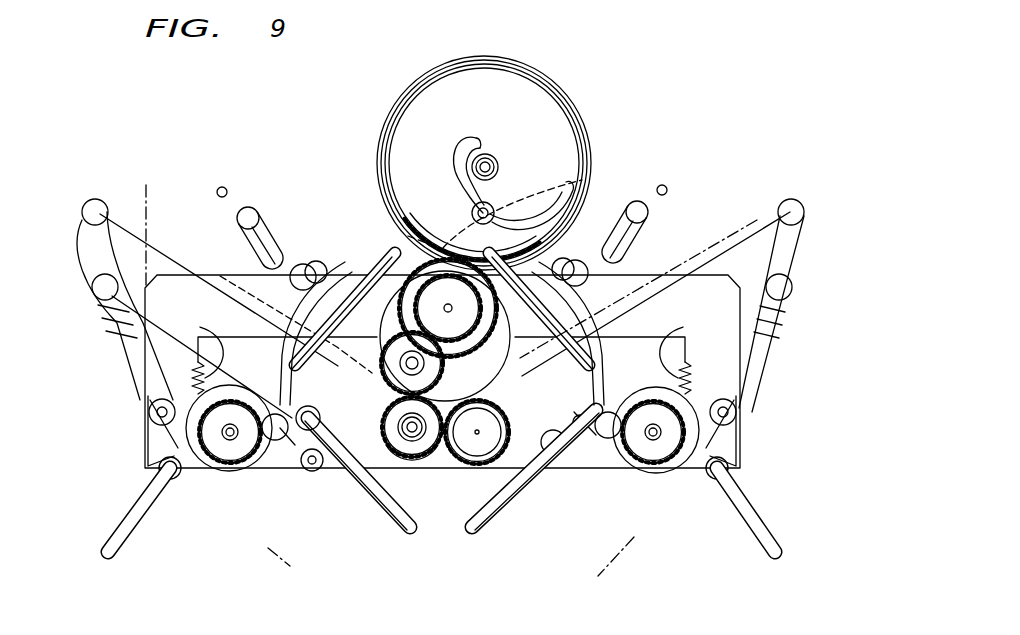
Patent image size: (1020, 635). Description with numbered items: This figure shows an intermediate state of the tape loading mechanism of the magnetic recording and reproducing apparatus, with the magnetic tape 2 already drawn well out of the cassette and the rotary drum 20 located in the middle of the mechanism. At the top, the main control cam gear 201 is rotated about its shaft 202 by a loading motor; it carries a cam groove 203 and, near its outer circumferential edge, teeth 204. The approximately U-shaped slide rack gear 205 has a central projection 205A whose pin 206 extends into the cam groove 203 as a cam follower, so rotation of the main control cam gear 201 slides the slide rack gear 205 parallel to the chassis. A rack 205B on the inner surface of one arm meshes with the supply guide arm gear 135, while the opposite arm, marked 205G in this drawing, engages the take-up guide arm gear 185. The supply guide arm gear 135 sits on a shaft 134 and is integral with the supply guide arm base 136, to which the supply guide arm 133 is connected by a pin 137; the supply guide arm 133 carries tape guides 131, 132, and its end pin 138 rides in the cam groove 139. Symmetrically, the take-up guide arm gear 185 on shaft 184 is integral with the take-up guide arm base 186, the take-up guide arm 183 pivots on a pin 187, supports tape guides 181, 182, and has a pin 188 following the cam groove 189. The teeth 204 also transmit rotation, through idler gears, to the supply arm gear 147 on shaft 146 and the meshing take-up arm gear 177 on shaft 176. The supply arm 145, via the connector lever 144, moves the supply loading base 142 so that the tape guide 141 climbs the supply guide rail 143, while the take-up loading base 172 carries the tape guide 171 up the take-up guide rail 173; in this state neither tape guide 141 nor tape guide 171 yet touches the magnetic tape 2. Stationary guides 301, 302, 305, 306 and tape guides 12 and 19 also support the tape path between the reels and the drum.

The magnetic tape 2 is at (442, 372).
The tape guide 12 is at (232, 444).
The tape guide 19 is at (602, 439).
The rotary drum 20 is at (600, 312).
The tape guide 131 is at (95, 198).
The tape guide 132 is at (92, 292).
The supply guide arm 133 is at (127, 344).
The shaft 134 is at (222, 472).
The supply guide arm gear 135 is at (216, 448).
The supply guide arm base 136 is at (147, 432).
The pin 137 is at (148, 410).
The pin 138 is at (158, 470).
The cam groove 139 is at (100, 534).
The tape guide 141 is at (312, 407).
The supply loading base 142 is at (330, 287).
The supply guide rail 143 is at (372, 509).
The connector lever 144 is at (303, 468).
The supply arm 145 is at (330, 470).
The shaft 146 is at (405, 469).
The supply arm gear 147 is at (386, 420).
The tape guide 171 is at (541, 436).
The take-up loading base 172 is at (578, 404).
The take-up guide rail 173 is at (505, 504).
The shaft 176 is at (503, 461).
The take-up arm gear 177 is at (440, 442).
The tape guide 181 is at (805, 210).
The tape guide 182 is at (794, 286).
The take-up guide arm 183 is at (768, 340).
The shaft 184 is at (650, 452).
The take-up guide arm gear 185 is at (665, 470).
The take-up guide arm base 186 is at (742, 392).
The pin 187 is at (737, 412).
The pin 188 is at (729, 468).
The cam groove 189 is at (762, 545).
The main control cam gear 201 is at (512, 91).
The shaft 202 is at (491, 154).
The cam groove 203 is at (459, 167).
The teeth 204 is at (396, 240).
The slide rack gear 205 is at (703, 291).
The central projection 205A is at (576, 185).
The rack 205B is at (217, 334).
The spring 205G is at (678, 373).
The pin 206 is at (499, 195).
The stationary guide 301 is at (224, 186).
The stationary inclined guide 302 is at (266, 224).
The stationary inclined guide 305 is at (640, 240).
The stationary guide 306 is at (667, 186).